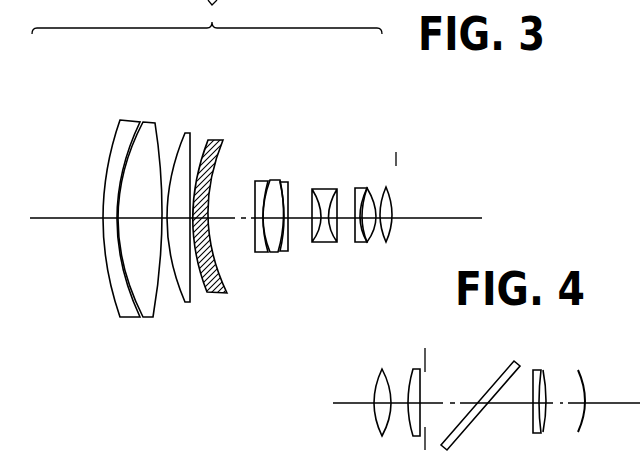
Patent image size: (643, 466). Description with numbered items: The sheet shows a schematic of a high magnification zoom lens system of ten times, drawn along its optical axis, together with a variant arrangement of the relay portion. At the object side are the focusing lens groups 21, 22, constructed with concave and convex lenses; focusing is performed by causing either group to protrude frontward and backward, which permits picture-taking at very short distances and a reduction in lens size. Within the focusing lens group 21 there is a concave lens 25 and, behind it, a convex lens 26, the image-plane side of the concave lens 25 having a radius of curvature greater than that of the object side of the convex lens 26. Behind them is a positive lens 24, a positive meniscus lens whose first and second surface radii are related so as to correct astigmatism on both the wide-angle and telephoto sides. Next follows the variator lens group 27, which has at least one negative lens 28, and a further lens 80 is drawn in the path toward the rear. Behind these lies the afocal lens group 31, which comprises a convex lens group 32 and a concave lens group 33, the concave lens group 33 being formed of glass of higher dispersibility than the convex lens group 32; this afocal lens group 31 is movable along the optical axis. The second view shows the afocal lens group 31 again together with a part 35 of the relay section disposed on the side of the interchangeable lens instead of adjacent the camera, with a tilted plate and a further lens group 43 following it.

In FIG. 3, the focusing lens group 21 is at (223, 83).
In FIG. 3, the focusing lens group 22 is at (170, 182).
In FIG. 3, the positive lens 24 is at (188, 132).
In FIG. 3, the concave lens 25 is at (126, 137).
In FIG. 3, the convex lens 26 is at (157, 133).
In FIG. 3, the variator lens group 27 is at (292, 151).
In FIG. 3, the negative lens 28 is at (260, 190).
In FIG. 3, the biconcave lens 80 is at (338, 151).
In FIG. 3, the afocal lens group 31 is at (387, 151).
In FIG. 4, the afocal lens group 31 is at (380, 370).
In FIG. 3, the convex lens group 32 is at (386, 240).
In FIG. 3, the concave lens group 33 is at (367, 190).
In FIG. 3, the part of the relay section 35 is at (398, 160).
In FIG. 4, the part of the relay section 35 is at (410, 370).
In FIG. 4, the eyepiece lens group 43 is at (580, 356).